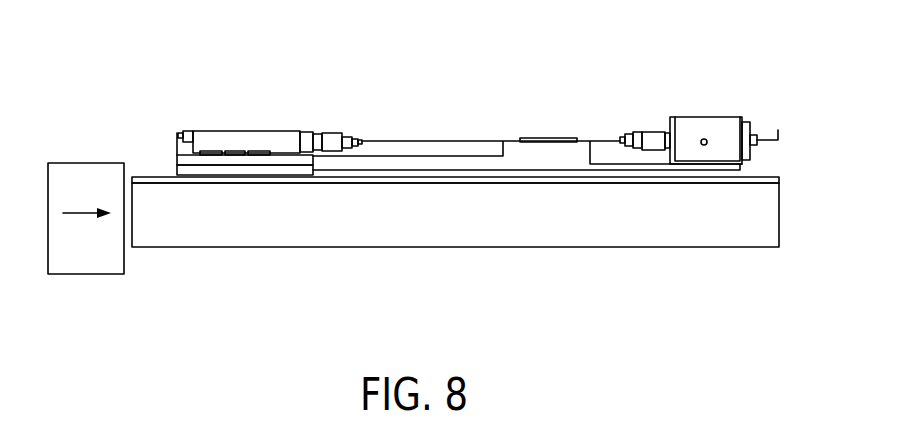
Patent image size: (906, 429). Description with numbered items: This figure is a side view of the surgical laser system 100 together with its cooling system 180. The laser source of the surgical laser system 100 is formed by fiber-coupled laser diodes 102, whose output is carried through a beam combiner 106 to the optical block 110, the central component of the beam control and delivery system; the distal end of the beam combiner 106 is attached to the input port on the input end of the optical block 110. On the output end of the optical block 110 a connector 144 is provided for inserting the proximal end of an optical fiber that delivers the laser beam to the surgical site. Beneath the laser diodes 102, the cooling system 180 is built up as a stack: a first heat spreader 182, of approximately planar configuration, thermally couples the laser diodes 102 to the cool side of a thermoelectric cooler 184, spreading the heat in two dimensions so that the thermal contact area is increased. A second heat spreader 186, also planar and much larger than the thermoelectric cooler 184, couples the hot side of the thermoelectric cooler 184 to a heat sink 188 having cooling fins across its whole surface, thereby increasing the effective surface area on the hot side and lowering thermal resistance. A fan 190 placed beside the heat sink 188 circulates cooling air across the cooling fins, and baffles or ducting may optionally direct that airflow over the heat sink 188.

The surgical laser system 100 is at (211, 98).
The laser diodes 102 is at (265, 128).
The beam combiner 106 is at (528, 138).
The optical block 110 is at (688, 117).
The connector 144 is at (759, 136).
The cooling system 180 is at (206, 280).
The first heat spreader 182 is at (178, 133).
The thermoelectric cooler 184 is at (175, 175).
The second heat spreader 186 is at (145, 176).
The heat sink 188 is at (283, 230).
The fan 190 is at (82, 262).